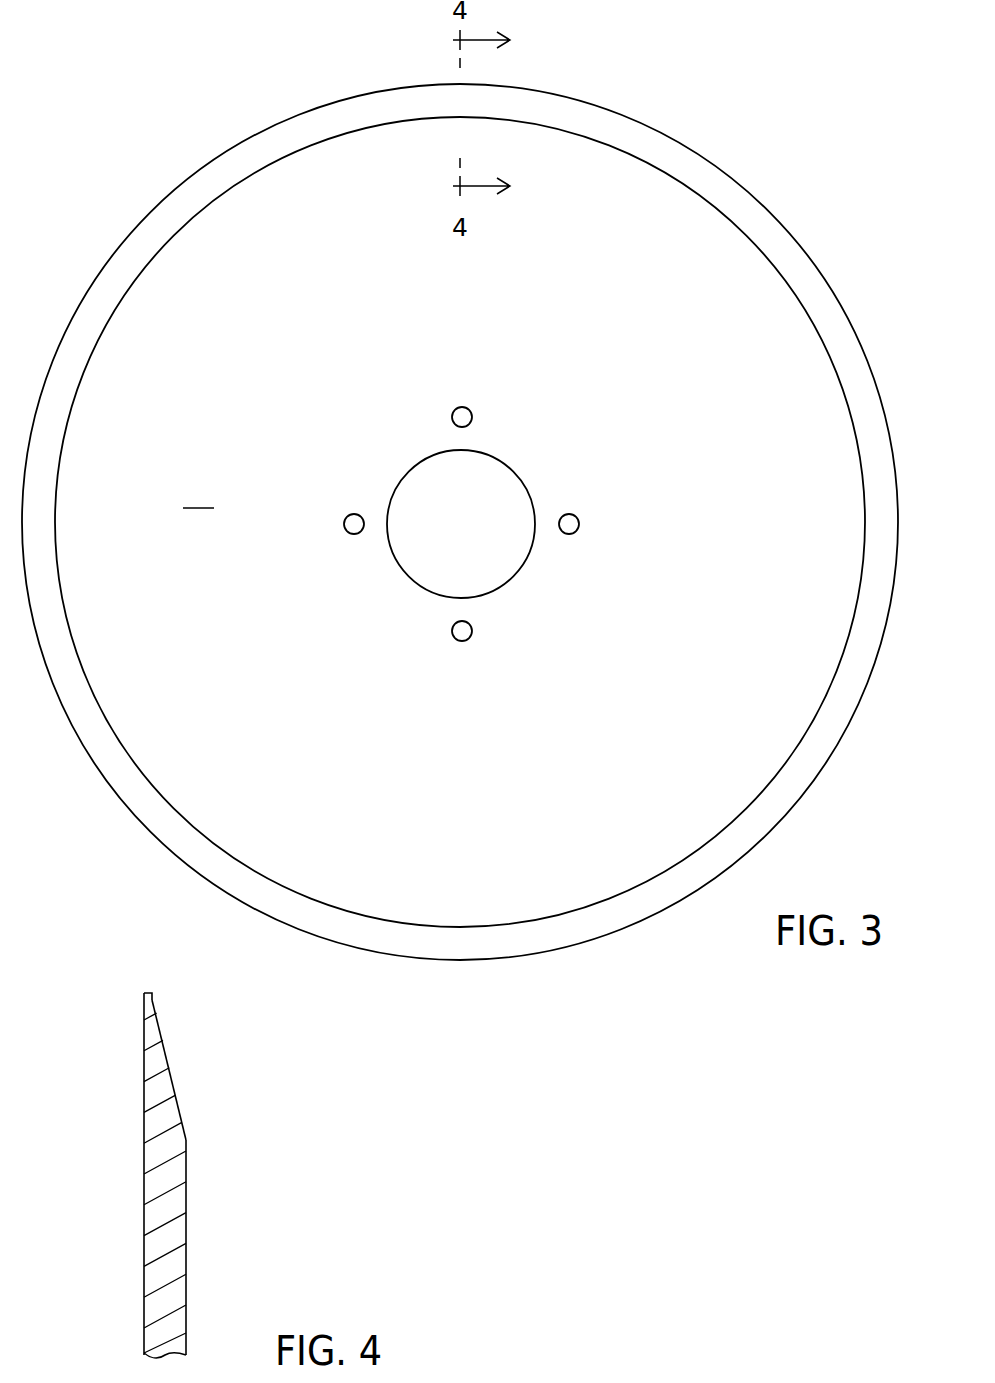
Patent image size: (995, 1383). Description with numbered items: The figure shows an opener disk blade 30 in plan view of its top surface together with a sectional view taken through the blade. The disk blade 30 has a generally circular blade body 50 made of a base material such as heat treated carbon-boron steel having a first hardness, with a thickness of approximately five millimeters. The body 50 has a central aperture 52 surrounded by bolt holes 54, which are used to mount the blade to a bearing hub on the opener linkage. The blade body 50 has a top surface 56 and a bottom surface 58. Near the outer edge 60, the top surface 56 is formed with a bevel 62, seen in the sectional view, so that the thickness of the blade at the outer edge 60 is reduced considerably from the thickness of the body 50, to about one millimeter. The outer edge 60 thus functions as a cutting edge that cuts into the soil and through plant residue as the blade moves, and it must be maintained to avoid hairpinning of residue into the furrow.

In FIG. 3, the disk blade 30 is at (778, 71).
In FIG. 3, the blade body 50 is at (247, 260).
In FIG. 3, the central aperture 52 is at (530, 486).
In FIG. 3, the bolt holes 54 is at (469, 410).
In FIG. 3, the top surface 56 is at (214, 508).
In FIG. 4, the top surface 56 is at (186, 1254).
In FIG. 4, the bottom surface 58 is at (143, 1218).
In FIG. 3, the outer edge 60 is at (612, 100).
In FIG. 4, the outer edge 60 is at (147, 992).
In FIG. 3, the bevel 62 is at (655, 153).
In FIG. 4, the bevel 62 is at (167, 1056).